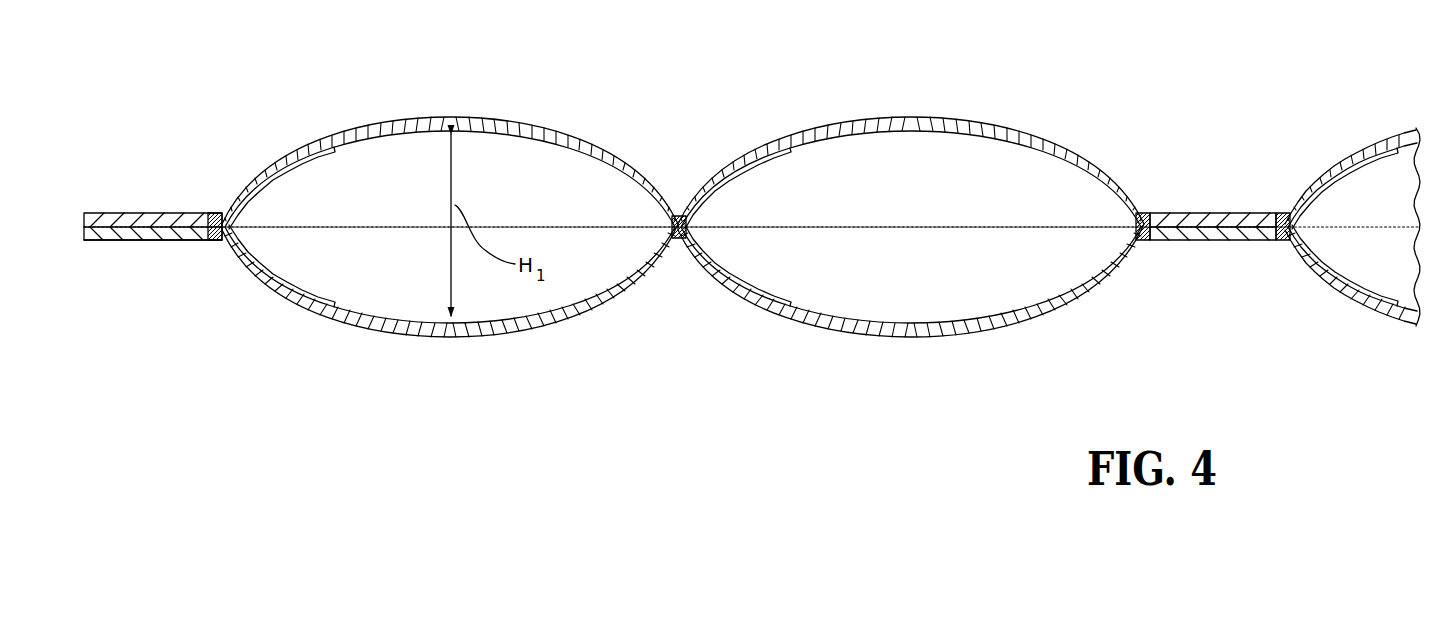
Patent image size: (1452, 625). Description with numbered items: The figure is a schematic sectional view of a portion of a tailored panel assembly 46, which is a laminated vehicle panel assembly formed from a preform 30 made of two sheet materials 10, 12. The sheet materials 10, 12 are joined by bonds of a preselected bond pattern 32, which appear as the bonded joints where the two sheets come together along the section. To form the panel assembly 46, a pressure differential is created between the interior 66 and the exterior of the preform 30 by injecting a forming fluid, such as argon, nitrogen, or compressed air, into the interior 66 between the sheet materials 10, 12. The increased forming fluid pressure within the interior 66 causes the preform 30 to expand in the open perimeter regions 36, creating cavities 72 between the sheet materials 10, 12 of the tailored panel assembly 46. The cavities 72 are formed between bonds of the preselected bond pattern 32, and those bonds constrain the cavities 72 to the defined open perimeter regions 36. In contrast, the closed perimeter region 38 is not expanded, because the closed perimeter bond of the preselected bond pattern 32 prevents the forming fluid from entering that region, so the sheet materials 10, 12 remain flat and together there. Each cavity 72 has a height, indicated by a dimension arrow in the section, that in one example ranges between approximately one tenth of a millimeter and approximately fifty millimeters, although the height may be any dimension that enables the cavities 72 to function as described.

The sheet material 10 is at (106, 213).
The sheet material 12 is at (128, 241).
The preform 30 is at (172, 212).
The preselected bond pattern 32 is at (211, 213).
The open perimeter region 36 is at (392, 324).
The closed perimeter region 38 is at (1213, 212).
The tailored panel assembly 46 is at (267, 92).
The interior 66 is at (312, 262).
The cavity 72 is at (529, 157).